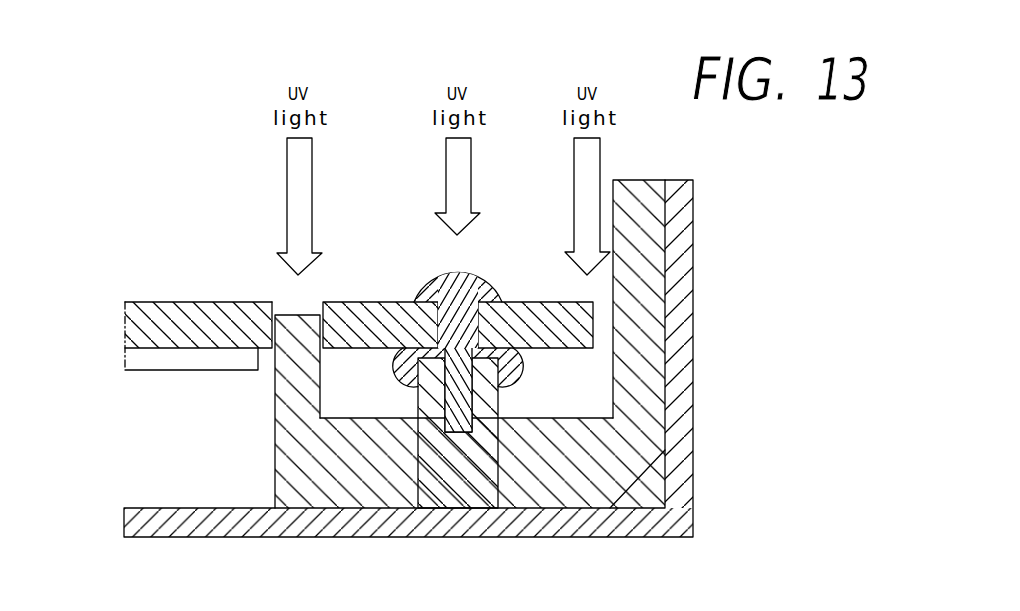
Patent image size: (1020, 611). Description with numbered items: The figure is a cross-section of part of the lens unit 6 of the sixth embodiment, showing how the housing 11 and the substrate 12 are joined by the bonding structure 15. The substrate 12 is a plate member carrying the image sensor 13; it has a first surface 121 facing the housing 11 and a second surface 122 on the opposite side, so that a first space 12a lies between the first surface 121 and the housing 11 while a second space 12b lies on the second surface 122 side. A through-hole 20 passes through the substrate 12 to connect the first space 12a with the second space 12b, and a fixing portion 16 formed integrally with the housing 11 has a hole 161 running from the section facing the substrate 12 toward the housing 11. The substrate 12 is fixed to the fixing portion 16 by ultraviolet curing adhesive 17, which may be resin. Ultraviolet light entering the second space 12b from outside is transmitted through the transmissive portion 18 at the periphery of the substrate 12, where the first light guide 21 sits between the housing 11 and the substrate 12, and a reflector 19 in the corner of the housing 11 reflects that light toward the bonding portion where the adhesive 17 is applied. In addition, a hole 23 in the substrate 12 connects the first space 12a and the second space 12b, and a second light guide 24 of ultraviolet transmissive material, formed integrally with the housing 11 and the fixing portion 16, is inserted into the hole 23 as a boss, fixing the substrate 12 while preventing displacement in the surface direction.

The lens unit 6 is at (210, 157).
The housing 11 is at (682, 275).
The substrate 12 is at (142, 327).
The first space 12a is at (143, 437).
The second space 12b is at (372, 192).
The first surface 121 is at (213, 349).
The second surface 122 is at (213, 302).
The image sensor 13 is at (155, 371).
The bonding structure 15 is at (475, 268).
The fixing portion 16 is at (463, 478).
The hole 161 is at (458, 407).
The adhesive 17 is at (490, 302).
The transmissive portion 18 is at (602, 328).
The reflector 19 is at (637, 483).
The through-hole 20 is at (462, 327).
The first light guide 21 is at (635, 203).
The hole 23 is at (302, 310).
The second light guide 24 is at (300, 450).